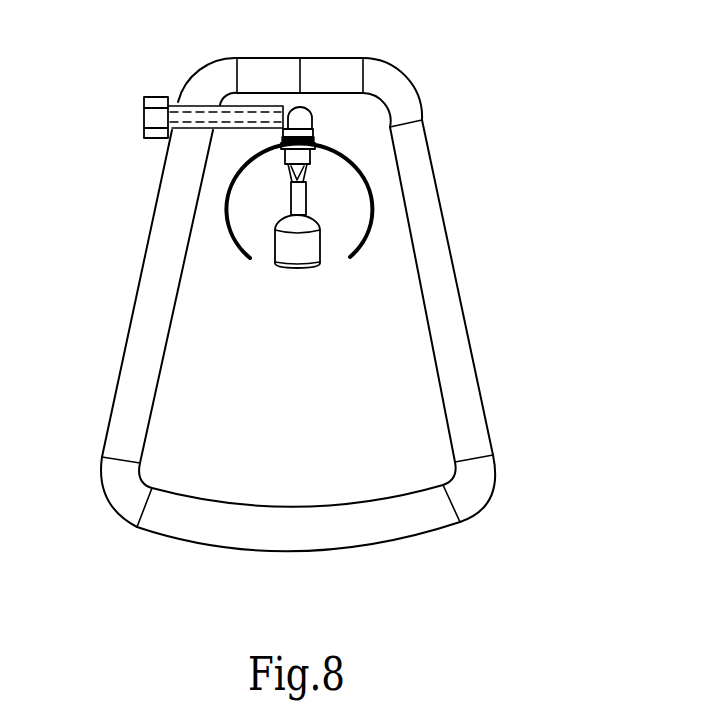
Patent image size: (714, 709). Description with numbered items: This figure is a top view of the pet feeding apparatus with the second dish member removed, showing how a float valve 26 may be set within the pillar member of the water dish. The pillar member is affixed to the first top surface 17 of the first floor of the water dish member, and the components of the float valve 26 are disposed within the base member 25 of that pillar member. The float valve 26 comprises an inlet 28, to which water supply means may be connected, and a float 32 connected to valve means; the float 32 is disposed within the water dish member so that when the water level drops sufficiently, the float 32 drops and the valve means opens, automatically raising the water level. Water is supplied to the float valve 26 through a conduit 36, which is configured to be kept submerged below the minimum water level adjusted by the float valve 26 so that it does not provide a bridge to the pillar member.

The first top surface 17 is at (309, 427).
The base member 25 is at (373, 213).
The float valve 26 is at (350, 282).
The inlet 28 is at (143, 118).
The float 32 is at (273, 265).
The conduit 36 is at (240, 123).